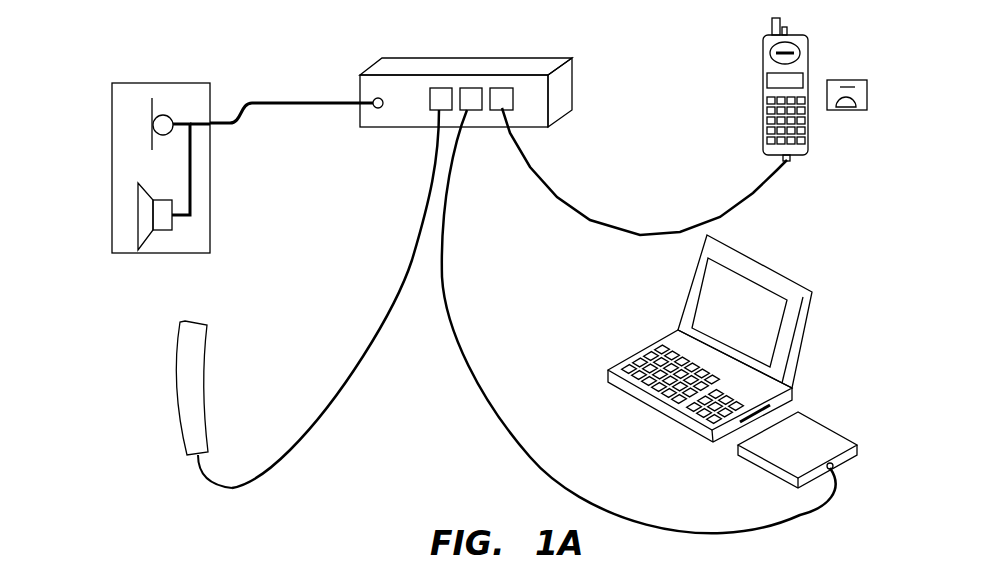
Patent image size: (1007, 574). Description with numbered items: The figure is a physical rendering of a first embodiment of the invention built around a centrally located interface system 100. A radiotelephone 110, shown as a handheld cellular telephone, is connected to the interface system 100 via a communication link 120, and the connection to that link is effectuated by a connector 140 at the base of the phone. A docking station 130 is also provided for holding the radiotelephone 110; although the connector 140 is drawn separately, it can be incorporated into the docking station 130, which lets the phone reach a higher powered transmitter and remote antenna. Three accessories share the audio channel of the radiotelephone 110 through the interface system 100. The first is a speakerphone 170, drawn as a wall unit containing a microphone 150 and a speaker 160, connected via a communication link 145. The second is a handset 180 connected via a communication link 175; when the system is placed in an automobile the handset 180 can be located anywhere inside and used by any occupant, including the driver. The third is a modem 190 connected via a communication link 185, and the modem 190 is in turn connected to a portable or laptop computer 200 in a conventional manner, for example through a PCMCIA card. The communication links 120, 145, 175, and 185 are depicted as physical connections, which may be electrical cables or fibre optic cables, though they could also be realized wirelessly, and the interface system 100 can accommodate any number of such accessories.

The interface system 100 is at (480, 57).
The radiotelephone 110 is at (808, 52).
The communication link 120 is at (570, 210).
The docking station 130 is at (847, 80).
The connector 140 is at (790, 160).
The communication link 145 is at (262, 102).
The microphone 150 is at (163, 115).
The speaker 160 is at (163, 232).
The speakerphone 170 is at (112, 152).
The communication link 175 is at (425, 205).
The handset 180 is at (172, 380).
The communication link 185 is at (442, 267).
The modem 190 is at (807, 413).
The laptop computer 200 is at (763, 263).